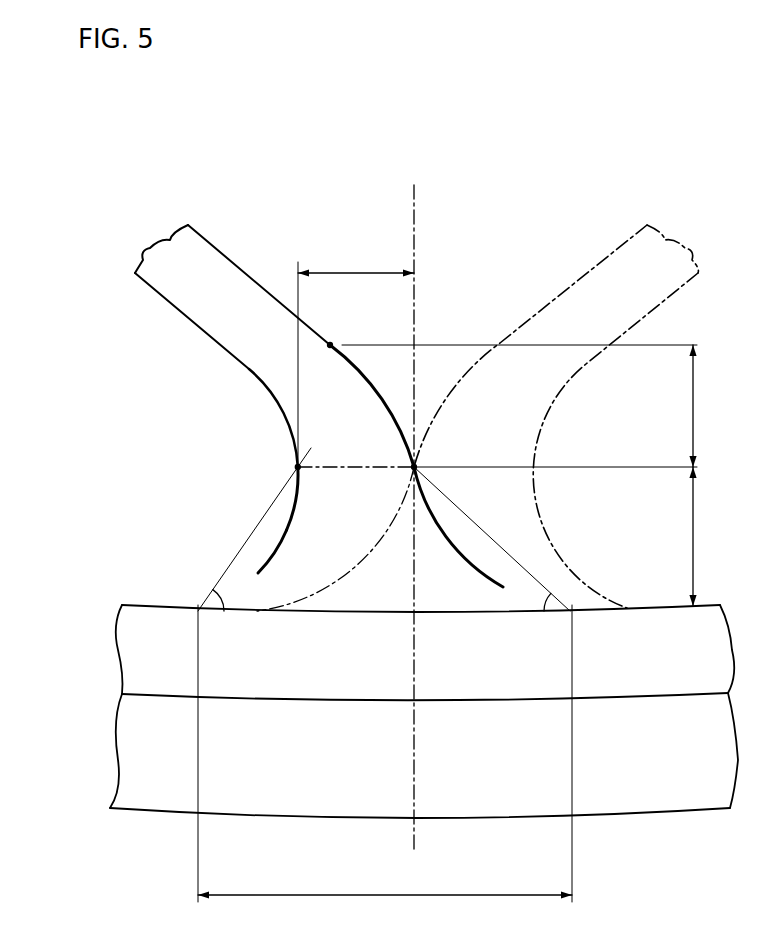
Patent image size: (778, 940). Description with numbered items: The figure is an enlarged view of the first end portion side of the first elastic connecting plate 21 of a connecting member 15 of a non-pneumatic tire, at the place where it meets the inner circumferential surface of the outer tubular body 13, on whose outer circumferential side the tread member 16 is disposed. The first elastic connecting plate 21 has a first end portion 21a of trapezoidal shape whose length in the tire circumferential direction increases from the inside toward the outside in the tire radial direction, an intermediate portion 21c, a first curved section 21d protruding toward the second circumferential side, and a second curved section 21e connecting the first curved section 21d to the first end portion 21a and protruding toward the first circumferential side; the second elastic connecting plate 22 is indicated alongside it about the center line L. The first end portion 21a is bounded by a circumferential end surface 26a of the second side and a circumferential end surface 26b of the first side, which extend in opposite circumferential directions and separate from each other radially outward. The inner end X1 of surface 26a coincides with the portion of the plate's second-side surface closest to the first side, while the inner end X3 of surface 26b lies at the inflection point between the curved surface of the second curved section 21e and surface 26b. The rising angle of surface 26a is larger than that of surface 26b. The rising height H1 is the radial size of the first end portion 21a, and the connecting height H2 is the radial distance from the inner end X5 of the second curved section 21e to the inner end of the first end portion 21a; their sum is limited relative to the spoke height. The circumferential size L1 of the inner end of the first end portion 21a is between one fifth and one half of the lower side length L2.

The outer tubular body 13 is at (163, 699).
The connecting member 15 is at (527, 155).
The tread member 16 is at (158, 800).
The first elastic connecting plate 21 is at (262, 307).
The first end portion 21a is at (281, 529).
The intermediate portion 21c is at (259, 285).
The first curved section 21d is at (232, 258).
The second curved section 21e is at (383, 395).
The second elastic connecting plate 22 is at (598, 262).
The circumferential end surface of the second side 26a is at (276, 551).
The circumferential end surface of the first side 26b is at (453, 547).
The inner end of the circumferential end surface of the second side X1 is at (296, 467).
The inner end of the circumferential end surface of the first side X3 is at (412, 466).
The inner end of the circumferential end surface of the first side of the second cur X5 is at (328, 347).
The center line L is at (415, 226).
The size in the tire circumferential direction of the inner end of the first end por L1 is at (356, 354).
The lower side length L2 is at (385, 768).
The rising height H1 is at (574, 536).
The connecting height H2 is at (538, 406).